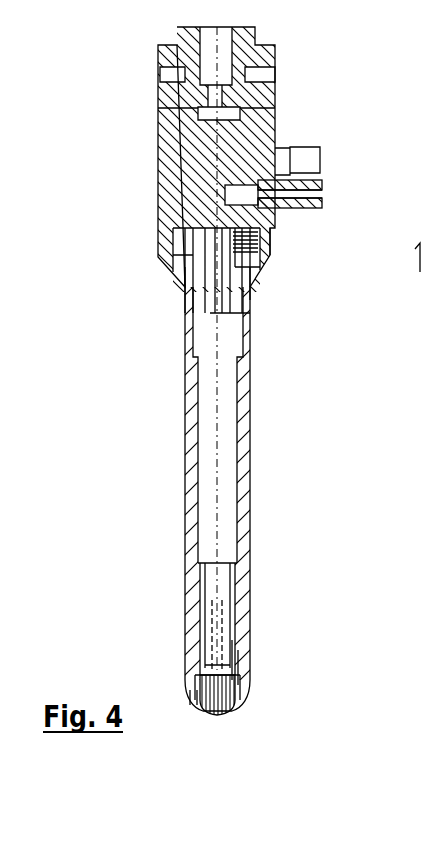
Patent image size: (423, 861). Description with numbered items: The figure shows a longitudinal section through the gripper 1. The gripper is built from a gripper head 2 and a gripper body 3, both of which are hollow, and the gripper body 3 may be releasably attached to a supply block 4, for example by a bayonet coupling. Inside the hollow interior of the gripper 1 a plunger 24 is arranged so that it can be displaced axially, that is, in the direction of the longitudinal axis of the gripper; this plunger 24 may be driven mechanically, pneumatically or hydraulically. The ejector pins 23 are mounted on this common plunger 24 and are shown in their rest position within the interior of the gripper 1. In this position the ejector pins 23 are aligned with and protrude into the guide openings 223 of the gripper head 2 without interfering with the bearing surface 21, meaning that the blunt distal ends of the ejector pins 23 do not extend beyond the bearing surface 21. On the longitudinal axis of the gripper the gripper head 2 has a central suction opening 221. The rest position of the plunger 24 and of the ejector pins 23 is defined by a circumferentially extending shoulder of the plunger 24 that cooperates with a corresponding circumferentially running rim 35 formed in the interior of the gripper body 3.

The gripper 1 is at (86, 317).
The gripper head 2 is at (188, 683).
The gripper body 3 is at (185, 397).
The supply block 4 is at (177, 150).
The bearing surface 21 is at (248, 707).
The ejector pins 23 is at (245, 680).
The plunger 24 is at (203, 640).
The rim 35 is at (237, 672).
The central suction opening 221 is at (226, 718).
The guide openings 223 is at (192, 703).